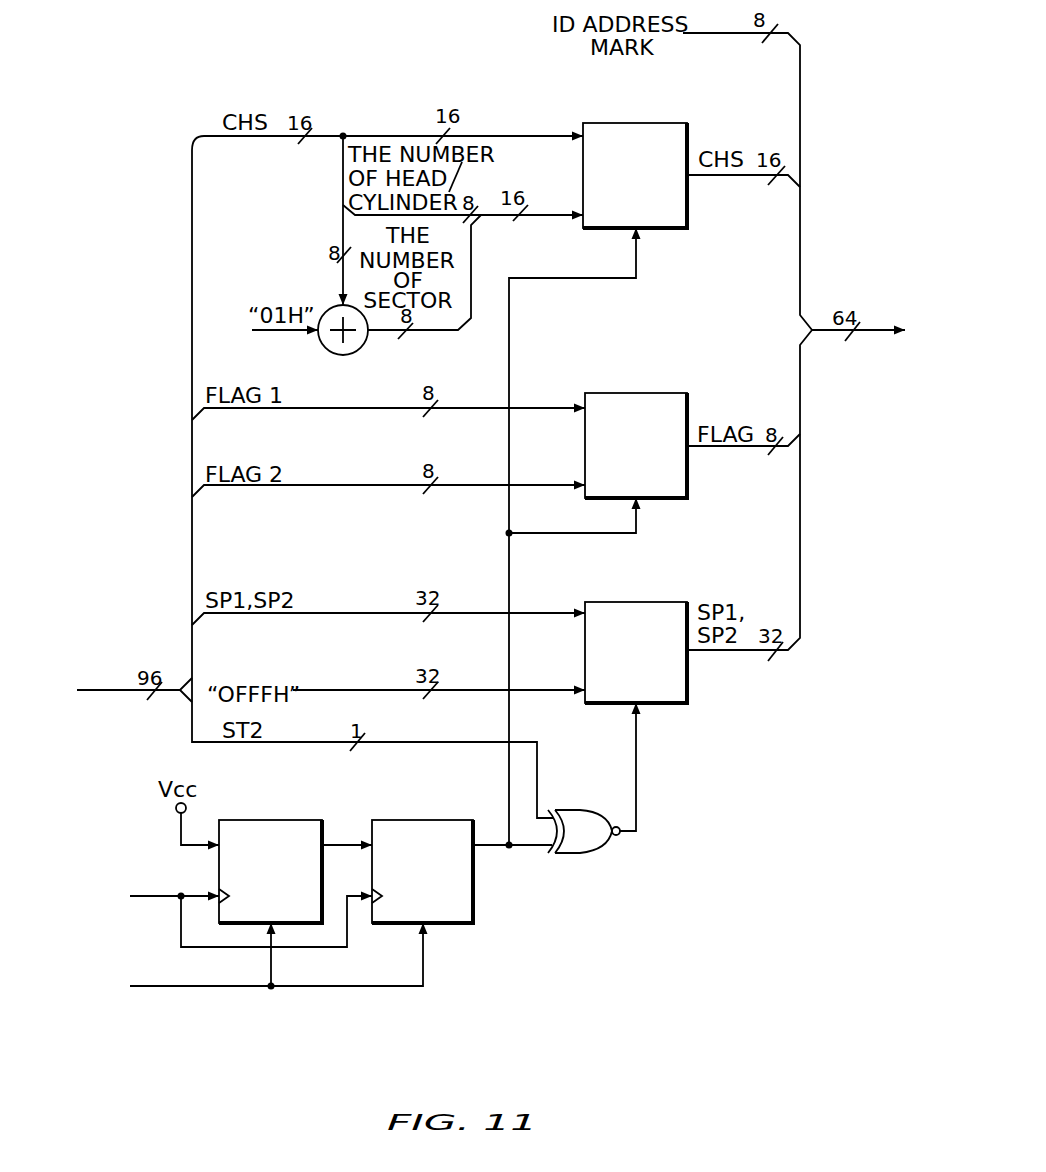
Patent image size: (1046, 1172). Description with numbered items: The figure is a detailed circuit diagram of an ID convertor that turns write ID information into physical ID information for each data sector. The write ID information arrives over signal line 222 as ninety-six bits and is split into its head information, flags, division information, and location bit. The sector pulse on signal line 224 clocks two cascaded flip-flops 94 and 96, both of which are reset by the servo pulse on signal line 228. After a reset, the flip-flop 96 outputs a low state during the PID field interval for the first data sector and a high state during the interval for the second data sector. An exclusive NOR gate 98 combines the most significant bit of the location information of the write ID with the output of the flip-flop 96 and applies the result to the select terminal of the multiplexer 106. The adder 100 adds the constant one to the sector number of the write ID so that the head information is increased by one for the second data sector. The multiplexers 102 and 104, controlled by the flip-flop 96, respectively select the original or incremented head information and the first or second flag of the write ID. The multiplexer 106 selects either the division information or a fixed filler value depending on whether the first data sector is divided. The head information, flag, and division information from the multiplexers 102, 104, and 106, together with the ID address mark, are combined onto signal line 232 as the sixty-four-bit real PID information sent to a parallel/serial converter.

The flip-flop 94 is at (268, 820).
The flip-flop 96 is at (422, 820).
The exclusive NOR gate 98 is at (581, 810).
The adder 100 is at (343, 355).
The multiplexer 102 is at (636, 123).
The multiplexer 104 is at (636, 393).
The multiplexer 106 is at (636, 602).
The signal line 222 is at (117, 704).
The signal line 224 is at (155, 899).
The signal line 228 is at (208, 989).
The signal line 232 is at (878, 332).